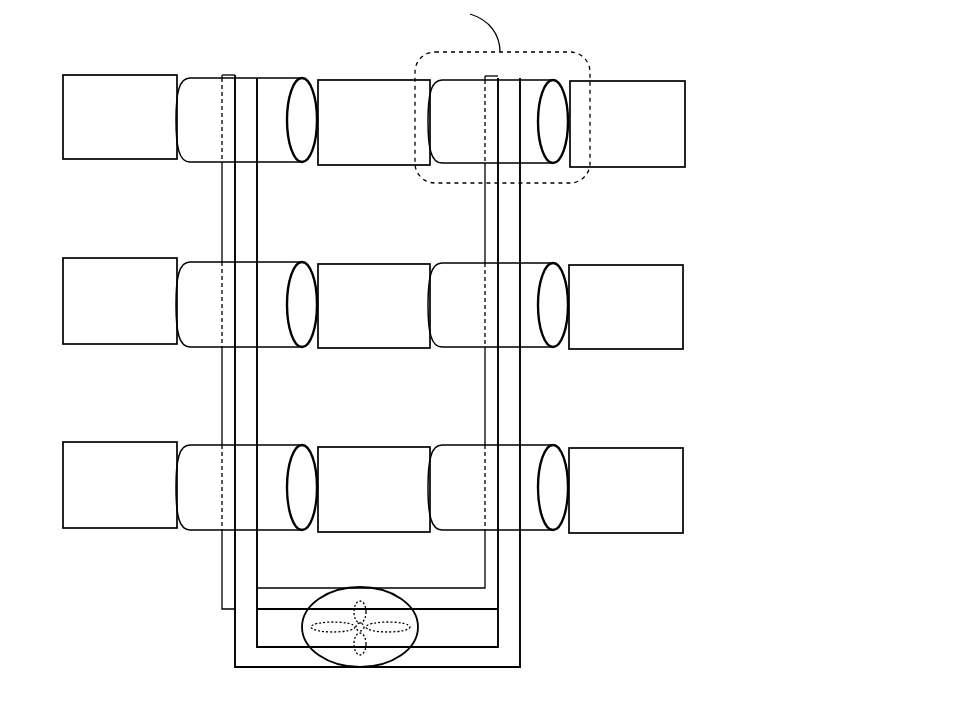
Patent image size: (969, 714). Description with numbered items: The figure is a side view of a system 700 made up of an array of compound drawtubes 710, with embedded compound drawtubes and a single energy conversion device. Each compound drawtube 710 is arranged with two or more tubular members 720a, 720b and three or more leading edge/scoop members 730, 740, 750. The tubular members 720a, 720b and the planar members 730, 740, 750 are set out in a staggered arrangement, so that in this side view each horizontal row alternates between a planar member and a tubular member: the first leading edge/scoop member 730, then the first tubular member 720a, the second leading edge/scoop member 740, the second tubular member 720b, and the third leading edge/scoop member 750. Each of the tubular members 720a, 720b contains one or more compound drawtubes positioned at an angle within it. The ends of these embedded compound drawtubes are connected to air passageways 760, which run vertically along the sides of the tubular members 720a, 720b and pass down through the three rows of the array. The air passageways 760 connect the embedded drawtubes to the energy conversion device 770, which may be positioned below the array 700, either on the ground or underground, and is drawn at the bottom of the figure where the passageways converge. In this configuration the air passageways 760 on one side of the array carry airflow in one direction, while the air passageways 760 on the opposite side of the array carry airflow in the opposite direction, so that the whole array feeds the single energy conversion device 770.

The system 700 is at (737, 57).
The compound drawtube 710 is at (716, 129).
The tubular member 720a is at (205, 78).
The tubular member 720b is at (540, 80).
The leading edge/scoop member 730 is at (85, 75).
The leading edge/scoop member 740 is at (343, 80).
The leading edge/scoop member 750 is at (636, 81).
The air passageway 760 is at (512, 227).
The energy conversion device 770 is at (357, 668).